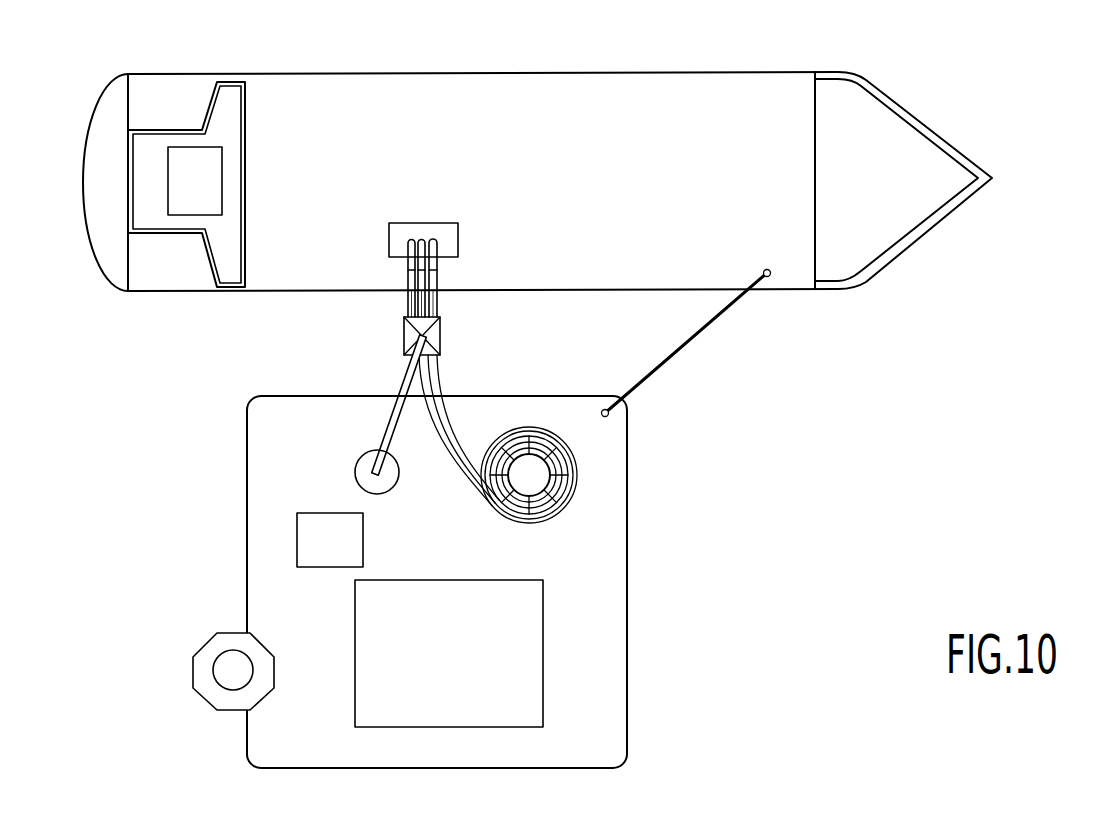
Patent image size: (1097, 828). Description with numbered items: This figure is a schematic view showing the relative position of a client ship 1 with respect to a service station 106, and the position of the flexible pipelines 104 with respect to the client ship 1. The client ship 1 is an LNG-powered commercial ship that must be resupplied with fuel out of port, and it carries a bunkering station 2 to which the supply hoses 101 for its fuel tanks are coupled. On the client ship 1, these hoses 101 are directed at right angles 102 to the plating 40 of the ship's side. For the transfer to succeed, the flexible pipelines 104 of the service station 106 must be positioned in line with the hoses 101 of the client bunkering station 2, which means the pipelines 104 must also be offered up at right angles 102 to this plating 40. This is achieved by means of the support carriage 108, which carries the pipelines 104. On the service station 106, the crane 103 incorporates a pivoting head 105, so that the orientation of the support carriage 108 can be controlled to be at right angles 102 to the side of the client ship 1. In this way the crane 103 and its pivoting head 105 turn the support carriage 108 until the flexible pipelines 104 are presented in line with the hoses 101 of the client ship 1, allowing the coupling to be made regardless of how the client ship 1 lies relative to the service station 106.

The client ship 1 is at (652, 111).
The bunkering station 2 is at (439, 226).
The plating 40 is at (282, 292).
The supply hoses 101 is at (438, 262).
The right angles 102 is at (397, 299).
The crane 103 is at (392, 428).
The flexible pipelines 104 is at (438, 297).
The pivoting head 105 is at (412, 338).
The service station 106 is at (597, 683).
The support carriage 108 is at (442, 338).